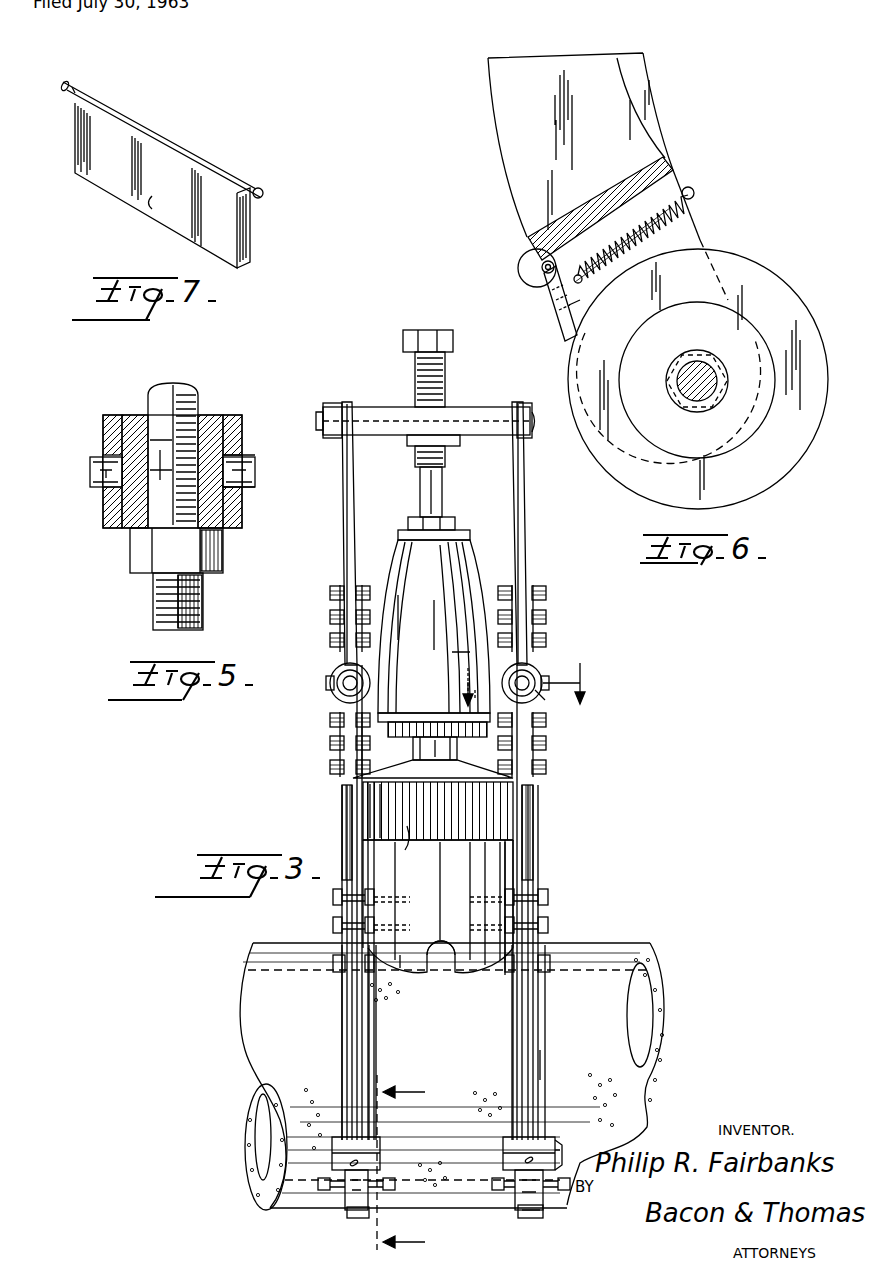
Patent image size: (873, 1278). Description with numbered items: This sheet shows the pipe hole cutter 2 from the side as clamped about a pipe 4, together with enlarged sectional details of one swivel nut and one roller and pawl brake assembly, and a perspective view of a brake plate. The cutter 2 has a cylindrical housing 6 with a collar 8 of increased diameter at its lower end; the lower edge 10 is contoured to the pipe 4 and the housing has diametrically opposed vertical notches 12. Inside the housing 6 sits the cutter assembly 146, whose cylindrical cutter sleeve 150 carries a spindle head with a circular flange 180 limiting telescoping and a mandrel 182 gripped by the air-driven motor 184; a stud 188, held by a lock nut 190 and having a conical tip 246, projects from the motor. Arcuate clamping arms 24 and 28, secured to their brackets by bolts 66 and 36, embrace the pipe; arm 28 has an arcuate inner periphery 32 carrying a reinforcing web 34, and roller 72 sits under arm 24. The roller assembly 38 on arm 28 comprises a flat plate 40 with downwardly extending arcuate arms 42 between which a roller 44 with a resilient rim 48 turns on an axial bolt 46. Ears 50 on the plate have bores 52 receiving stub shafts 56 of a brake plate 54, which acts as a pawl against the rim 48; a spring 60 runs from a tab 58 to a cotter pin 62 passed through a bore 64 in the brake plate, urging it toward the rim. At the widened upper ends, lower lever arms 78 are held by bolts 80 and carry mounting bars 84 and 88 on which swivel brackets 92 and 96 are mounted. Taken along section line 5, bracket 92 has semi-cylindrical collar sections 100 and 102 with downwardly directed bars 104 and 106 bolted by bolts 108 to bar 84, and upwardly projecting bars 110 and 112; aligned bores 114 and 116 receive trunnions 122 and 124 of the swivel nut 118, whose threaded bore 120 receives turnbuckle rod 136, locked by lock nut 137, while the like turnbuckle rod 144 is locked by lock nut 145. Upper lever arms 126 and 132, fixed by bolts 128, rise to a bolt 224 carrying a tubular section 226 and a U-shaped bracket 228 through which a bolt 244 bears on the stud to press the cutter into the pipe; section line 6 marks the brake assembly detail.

In FIG. 3, the pipe hole cutter 2 is at (536, 542).
In FIG. 3, the pipe 4 is at (610, 942).
In FIG. 3, the section line 5— 5 is at (524, 670).
In FIG. 3, the cylindrical housing 6 is at (407, 1033).
In FIG. 3, the collar 8 is at (400, 912).
In FIG. 3, the lower edge 10 is at (400, 952).
In FIG. 3, the vertical notches 12 is at (420, 960).
In FIG. 3, the arcuate clamping arm 24 is at (348, 1025).
In FIG. 6, the arcuate clamping arm 28 is at (501, 150).
In FIG. 3, the arcuate clamping arm 28 is at (525, 1033).
In FIG. 6, the arcuate inner periphery 32 is at (652, 68).
In FIG. 6, the arcuate reinforcing web 34 is at (632, 106).
In FIG. 3, the arcuate reinforcing web 34 is at (546, 1028).
In FIG. 3, the bolt 36 is at (550, 962).
In FIG. 6, the roller assembly 38 is at (647, 284).
In FIG. 3, the roller assembly 38 is at (508, 1221).
In FIG. 6, the flat plate 40 is at (615, 190).
In FIG. 3, the flat plate 40 is at (550, 1137).
In FIG. 6, the arcuate arms 42 is at (702, 233).
In FIG. 3, the arcuate arms 42 is at (504, 1186).
In FIG. 6, the roller 44 is at (792, 292).
In FIG. 3, the roller 44 is at (518, 1212).
In FIG. 6, the axial bolt 46 is at (708, 363).
In FIG. 3, the axial bolt 46 is at (515, 1183).
In FIG. 6, the rim 48 is at (778, 485).
In FIG. 3, the rim 48 is at (530, 1218).
In FIG. 6, the ears 50 is at (527, 281).
In FIG. 3, the ears 50 is at (503, 1145).
In FIG. 6, the bores 52 is at (541, 268).
In FIG. 7, the brake plate 54 is at (252, 245).
In FIG. 6, the brake plate 54 is at (565, 333).
In FIG. 3, the brake plate 54 is at (556, 1160).
In FIG. 7, the stub shafts 56 is at (74, 82).
In FIG. 6, the tab 58 is at (684, 186).
In FIG. 6, the spring 60 is at (644, 226).
In FIG. 6, the cotter pin 62 is at (553, 308).
In FIG. 7, the bore 64 is at (166, 206).
In FIG. 6, the bore 64 is at (593, 334).
In FIG. 3, the bolt 66 is at (333, 963).
In FIG. 3, the roller 72 is at (348, 1218).
In FIG. 3, the lower lever arms 78 is at (553, 912).
In FIG. 3, the bolts 80 is at (548, 898).
In FIG. 3, the mounting bar 84 is at (528, 838).
In FIG. 3, the mounting bar 88 is at (342, 808).
In FIG. 5, the swivel bracket 92 is at (173, 502).
In FIG. 3, the swivel bracket 92 is at (537, 672).
In FIG. 3, the swivel bracket 96 is at (328, 670).
In FIG. 5, the semi-cylindrical collar section 100 is at (105, 508).
In FIG. 3, the semi-cylindrical collar section 100 is at (500, 670).
In FIG. 5, the semi-cylindrical collar section 102 is at (243, 428).
In FIG. 3, the semi-cylindrical collar section 102 is at (545, 700).
In FIG. 3, the downwardly directed bar 104 is at (512, 752).
In FIG. 3, the downwardly directed bar 106 is at (548, 750).
In FIG. 3, the bolts 108 is at (548, 770).
In FIG. 3, the upwardly projecting bar 110 is at (513, 585).
In FIG. 3, the upwardly projecting bar 112 is at (530, 592).
In FIG. 5, the bore 114 is at (105, 458).
In FIG. 5, the bore 116 is at (250, 457).
In FIG. 5, the swivel nut 118 is at (137, 415).
In FIG. 5, the threaded bore 120 is at (198, 428).
In FIG. 5, the trunnion 122 is at (92, 476).
In FIG. 5, the trunnion 124 is at (256, 474).
In FIG. 3, the upper lever arm 126 is at (528, 515).
In FIG. 3, the bolts 128 is at (546, 632).
In FIG. 3, the upper lever arm 132 is at (342, 520).
In FIG. 5, the turnbuckle rod 136 is at (203, 594).
In FIG. 3, the turnbuckle rod 136 is at (550, 677).
In FIG. 5, the lock nut 137 is at (224, 552).
In FIG. 3, the lock nut 137 is at (585, 695).
In FIG. 3, the turnbuckle rod 144 is at (340, 698).
In FIG. 3, the lock nut 145 is at (338, 683).
In FIG. 3, the cutter assembly 146 is at (500, 810).
In FIG. 3, the cylindrical cutter sleeve 150 is at (455, 840).
In FIG. 3, the circular flange 180 is at (400, 786).
In FIG. 3, the mandrel 182 is at (413, 752).
In FIG. 3, the air-driven motor 184 is at (478, 548).
In FIG. 3, the stud 188 is at (443, 508).
In FIG. 3, the lock nut 190 is at (408, 523).
In FIG. 3, the bolt 224 is at (548, 436).
In FIG. 3, the tubular section 226 is at (365, 407).
In FIG. 3, the U-shaped bracket 228 is at (462, 412).
In FIG. 3, the bolt 244 is at (428, 330).
In FIG. 3, the conical tip 246 is at (415, 460).